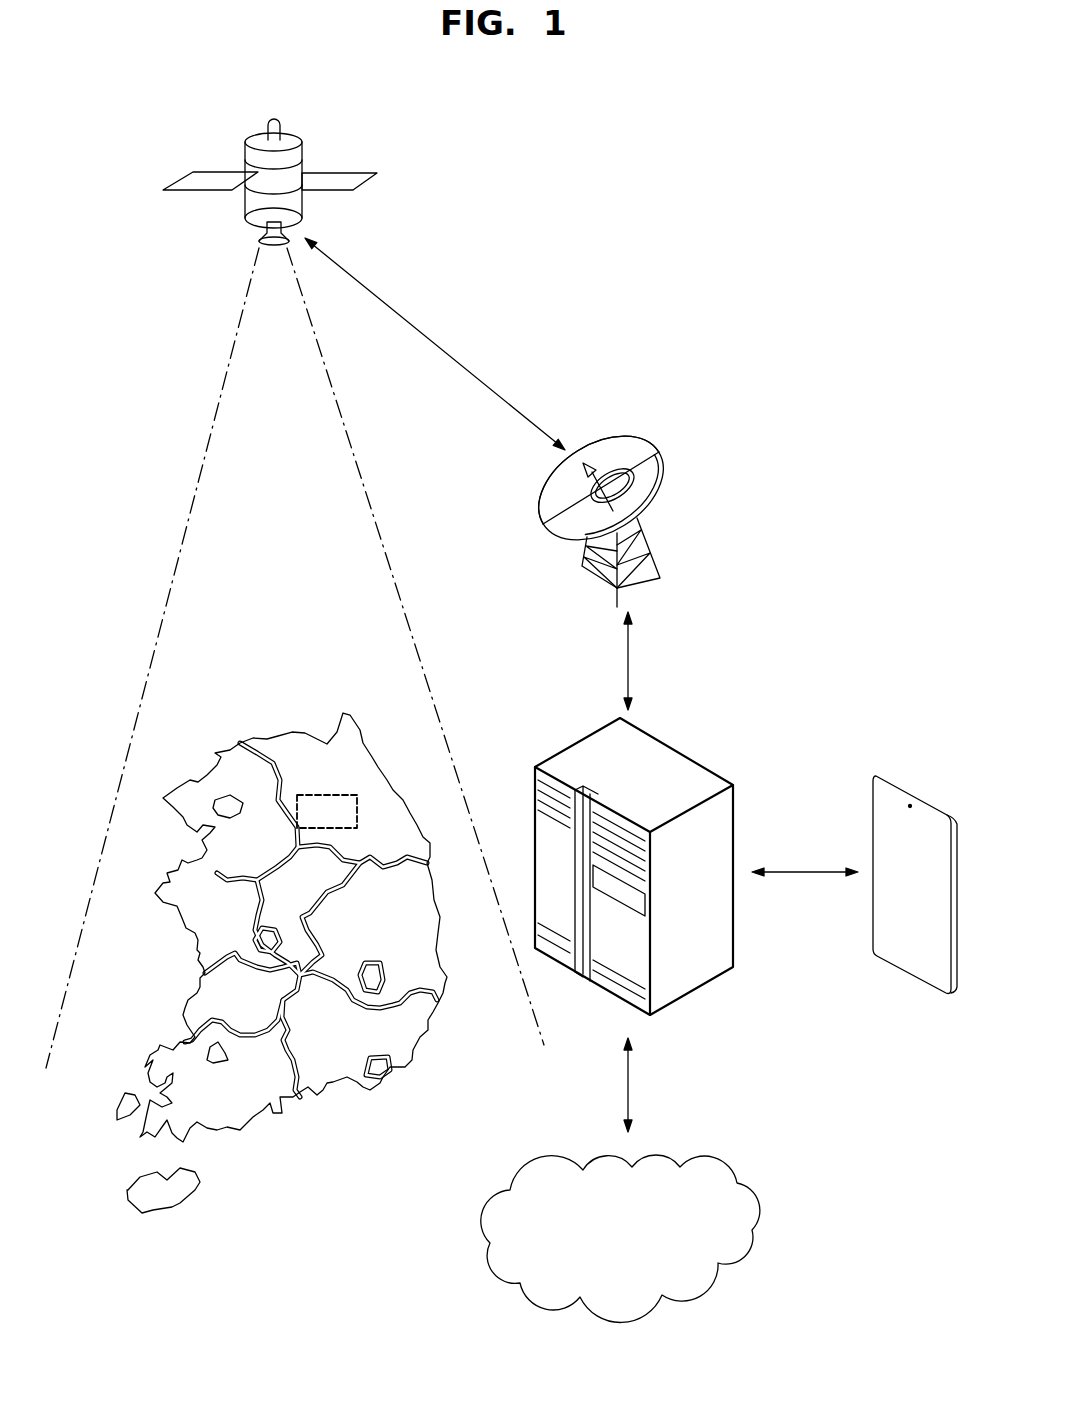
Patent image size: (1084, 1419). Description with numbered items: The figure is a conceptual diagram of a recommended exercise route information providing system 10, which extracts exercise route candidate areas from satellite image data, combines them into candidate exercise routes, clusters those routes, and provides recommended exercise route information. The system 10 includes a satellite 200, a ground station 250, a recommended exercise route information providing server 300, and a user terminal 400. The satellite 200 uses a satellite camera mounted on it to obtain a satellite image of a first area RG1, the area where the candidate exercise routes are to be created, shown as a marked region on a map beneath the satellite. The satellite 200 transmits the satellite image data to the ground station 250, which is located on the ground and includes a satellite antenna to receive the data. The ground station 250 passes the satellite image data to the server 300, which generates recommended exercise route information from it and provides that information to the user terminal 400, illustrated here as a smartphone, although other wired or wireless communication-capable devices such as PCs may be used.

The recommended exercise route information providing system 10 is at (686, 152).
The satellite 200 is at (295, 157).
The ground station 250 is at (637, 450).
The recommended exercise route information providing server 300 is at (683, 772).
The user terminal 400 is at (905, 790).
The first area RG1 is at (337, 794).